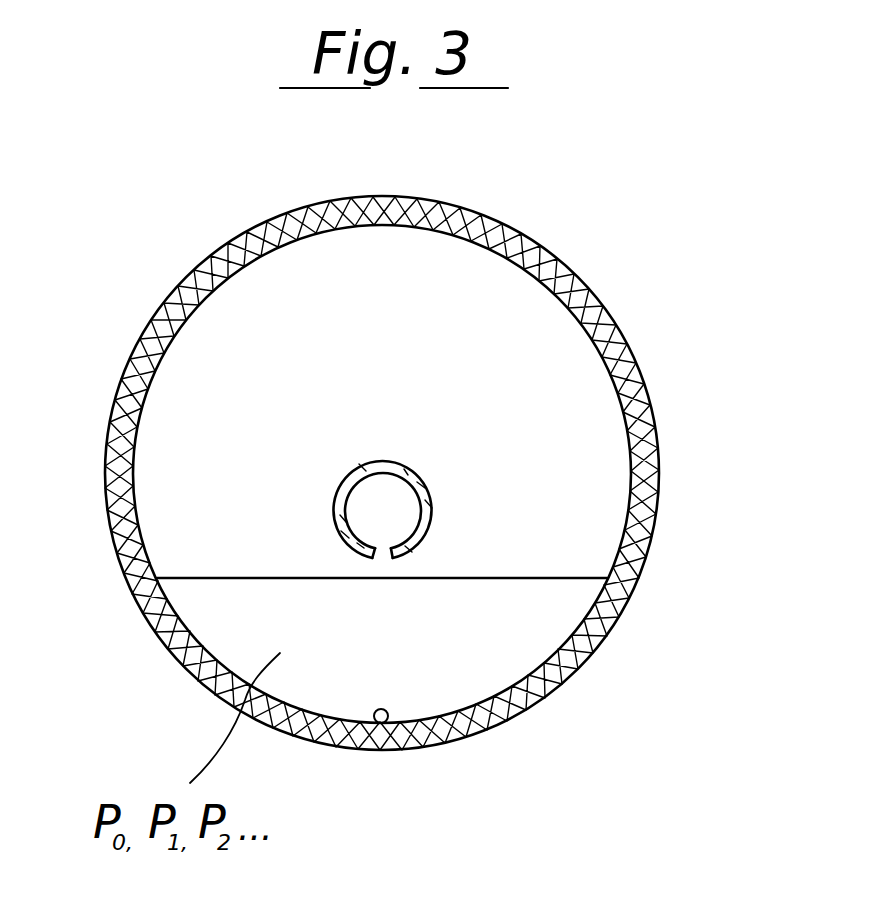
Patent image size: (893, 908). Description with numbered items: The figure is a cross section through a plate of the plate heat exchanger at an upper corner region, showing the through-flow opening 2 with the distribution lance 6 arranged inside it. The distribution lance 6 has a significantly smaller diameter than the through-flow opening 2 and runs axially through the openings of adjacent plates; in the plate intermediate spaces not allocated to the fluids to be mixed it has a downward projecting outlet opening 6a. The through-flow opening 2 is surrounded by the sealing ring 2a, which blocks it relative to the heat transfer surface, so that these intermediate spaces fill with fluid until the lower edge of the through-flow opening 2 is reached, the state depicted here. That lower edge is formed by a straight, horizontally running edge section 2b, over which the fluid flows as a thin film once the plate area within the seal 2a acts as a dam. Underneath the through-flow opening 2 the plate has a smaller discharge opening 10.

The through-flow opening 2 is at (247, 317).
The sealing ring 2a is at (585, 303).
The edge section 2b is at (312, 578).
The distribution lance 6 is at (368, 470).
The outlet opening 6a is at (373, 557).
The discharge opening 10 is at (390, 750).